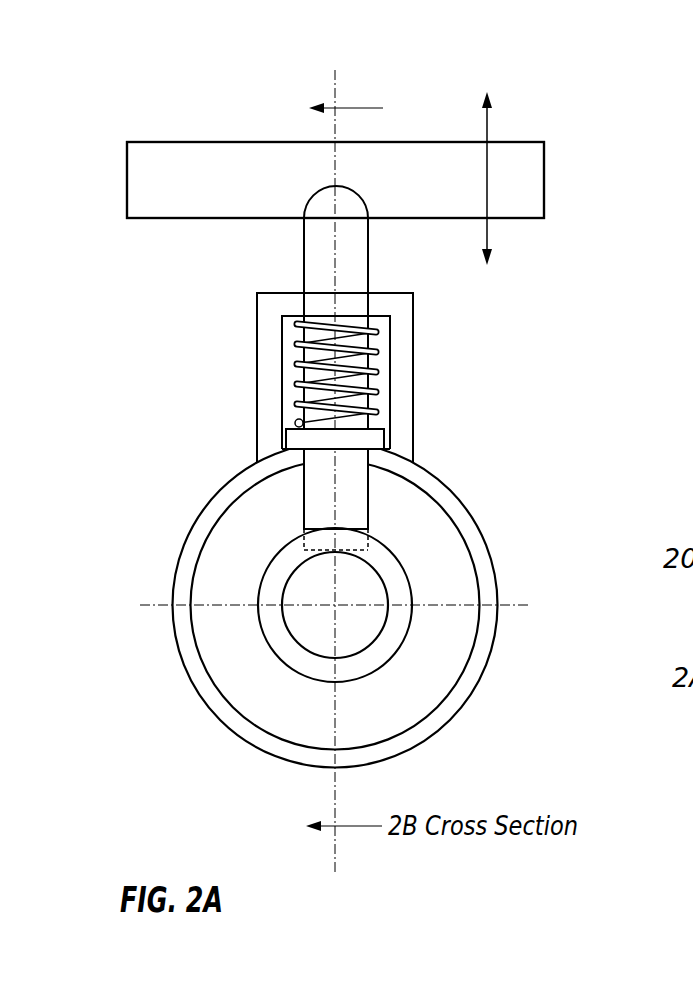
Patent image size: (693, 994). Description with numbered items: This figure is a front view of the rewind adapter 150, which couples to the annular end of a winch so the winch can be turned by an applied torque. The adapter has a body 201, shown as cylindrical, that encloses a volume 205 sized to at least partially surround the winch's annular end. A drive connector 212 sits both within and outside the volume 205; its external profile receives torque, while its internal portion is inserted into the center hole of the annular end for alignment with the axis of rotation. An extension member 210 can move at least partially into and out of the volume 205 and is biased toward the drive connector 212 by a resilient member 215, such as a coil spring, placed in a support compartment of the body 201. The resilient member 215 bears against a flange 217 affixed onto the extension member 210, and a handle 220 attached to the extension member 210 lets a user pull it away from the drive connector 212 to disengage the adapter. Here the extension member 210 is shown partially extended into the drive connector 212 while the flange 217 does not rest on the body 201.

The rewind adapter 150 is at (138, 111).
The handle 220 is at (544, 170).
The resilient member 215 is at (375, 378).
The flange 217 is at (365, 438).
The extension member 210 is at (370, 492).
The volume 205 is at (455, 605).
The drive connector 212 is at (273, 657).
The body 201 is at (453, 718).